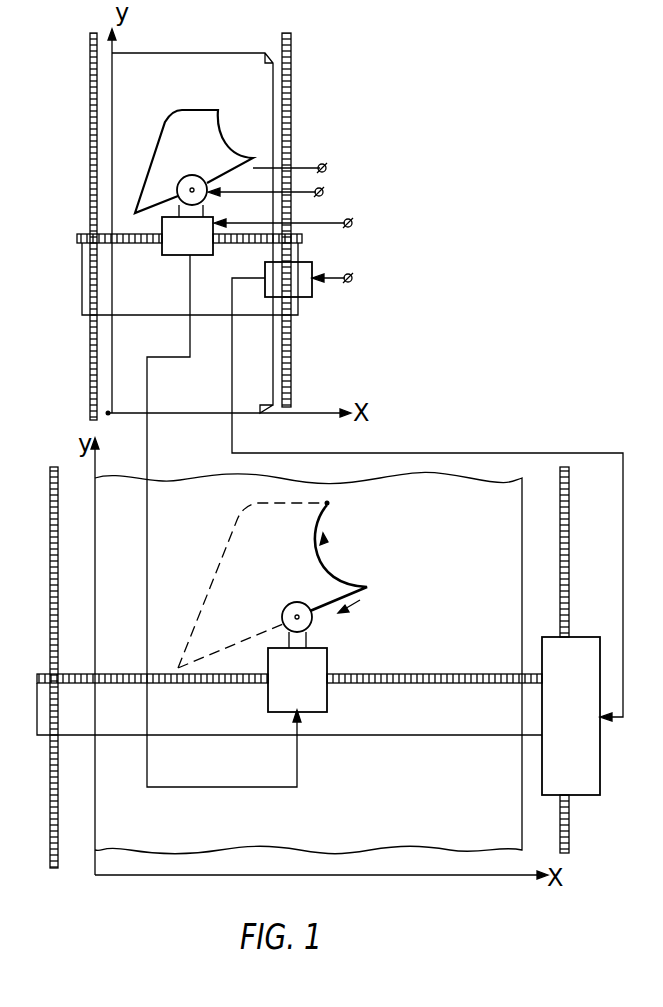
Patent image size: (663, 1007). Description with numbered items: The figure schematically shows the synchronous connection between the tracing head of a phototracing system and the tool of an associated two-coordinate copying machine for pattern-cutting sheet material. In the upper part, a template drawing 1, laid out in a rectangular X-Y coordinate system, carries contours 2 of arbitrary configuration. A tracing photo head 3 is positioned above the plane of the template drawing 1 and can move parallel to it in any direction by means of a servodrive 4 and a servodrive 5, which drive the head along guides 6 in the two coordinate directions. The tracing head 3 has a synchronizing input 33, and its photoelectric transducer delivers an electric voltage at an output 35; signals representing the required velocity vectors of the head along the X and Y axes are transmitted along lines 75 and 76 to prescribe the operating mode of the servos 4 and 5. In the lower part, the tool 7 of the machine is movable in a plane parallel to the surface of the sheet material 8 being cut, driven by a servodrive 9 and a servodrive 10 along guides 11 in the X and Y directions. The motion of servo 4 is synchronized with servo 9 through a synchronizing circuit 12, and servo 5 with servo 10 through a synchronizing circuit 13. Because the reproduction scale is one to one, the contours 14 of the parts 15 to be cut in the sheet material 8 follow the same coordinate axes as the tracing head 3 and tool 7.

The template drawing 1 is at (190, 60).
The contours 2 is at (203, 111).
The tracing photo head 3 is at (192, 175).
The servodrive 4 is at (187, 236).
The servodrive 5 is at (288, 279).
The guides 6 is at (82, 234).
The tool 7 is at (287, 604).
The sheet material 8 is at (522, 510).
The servodrive 9 is at (297, 680).
The servodrive 10 is at (571, 716).
The guides 11 is at (43, 673).
The synchronizing circuit 12 is at (145, 463).
The synchronizing circuit 13 is at (230, 450).
The contours 14 is at (340, 580).
The parts 15 is at (232, 538).
The synchronizing input 33 is at (323, 195).
The output 35 is at (326, 164).
The line 75 is at (352, 219).
The line 76 is at (351, 283).